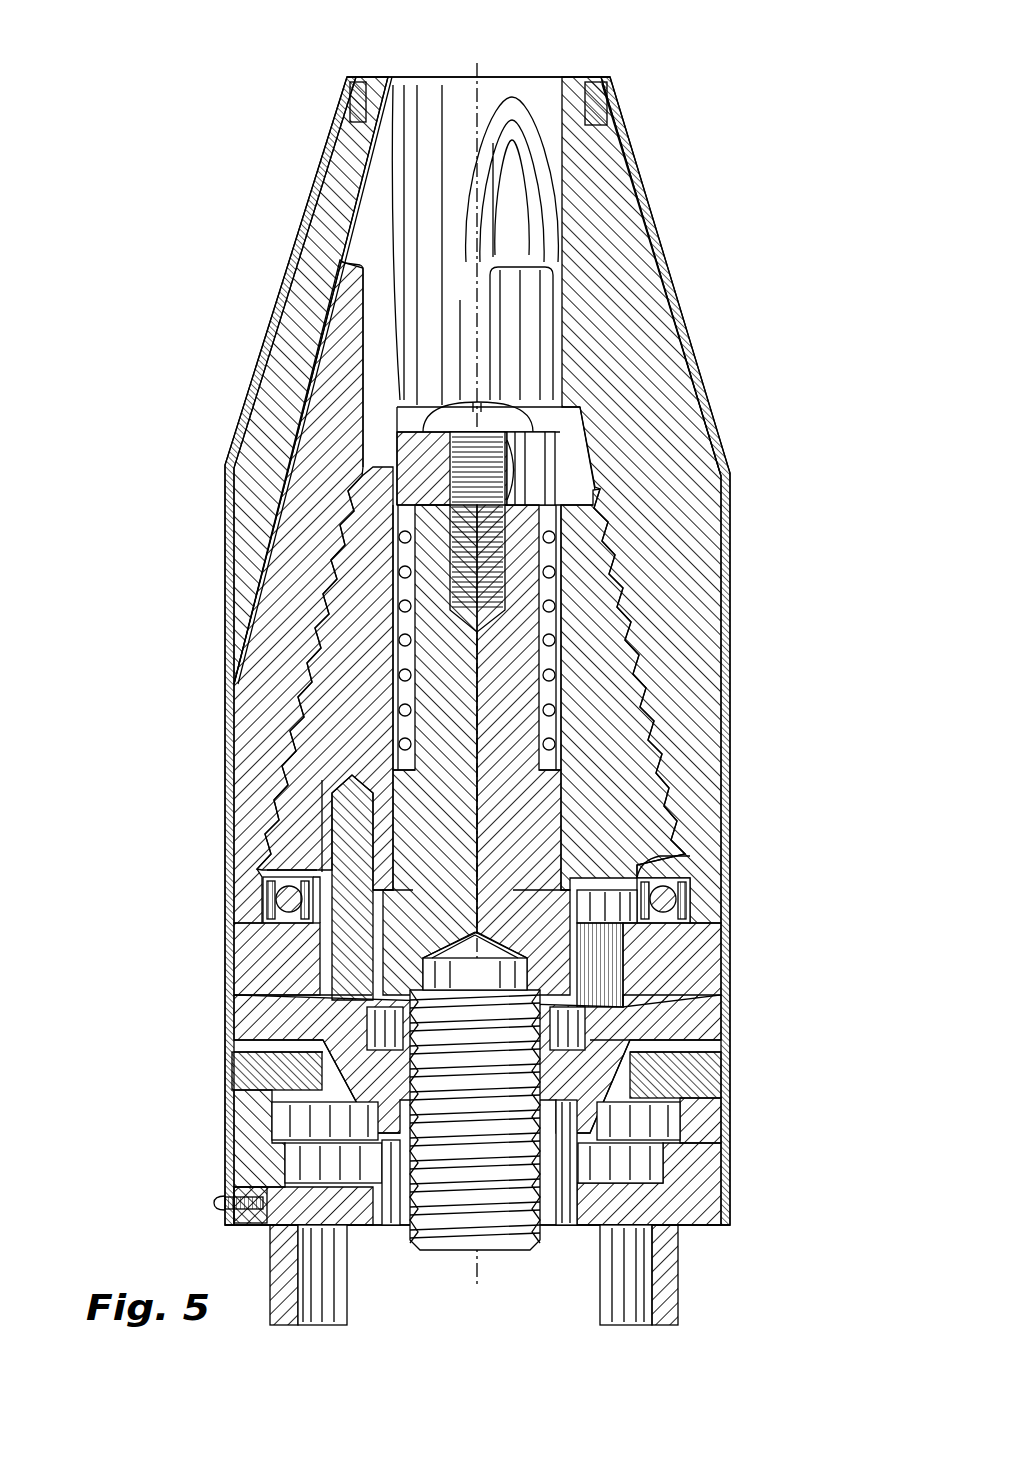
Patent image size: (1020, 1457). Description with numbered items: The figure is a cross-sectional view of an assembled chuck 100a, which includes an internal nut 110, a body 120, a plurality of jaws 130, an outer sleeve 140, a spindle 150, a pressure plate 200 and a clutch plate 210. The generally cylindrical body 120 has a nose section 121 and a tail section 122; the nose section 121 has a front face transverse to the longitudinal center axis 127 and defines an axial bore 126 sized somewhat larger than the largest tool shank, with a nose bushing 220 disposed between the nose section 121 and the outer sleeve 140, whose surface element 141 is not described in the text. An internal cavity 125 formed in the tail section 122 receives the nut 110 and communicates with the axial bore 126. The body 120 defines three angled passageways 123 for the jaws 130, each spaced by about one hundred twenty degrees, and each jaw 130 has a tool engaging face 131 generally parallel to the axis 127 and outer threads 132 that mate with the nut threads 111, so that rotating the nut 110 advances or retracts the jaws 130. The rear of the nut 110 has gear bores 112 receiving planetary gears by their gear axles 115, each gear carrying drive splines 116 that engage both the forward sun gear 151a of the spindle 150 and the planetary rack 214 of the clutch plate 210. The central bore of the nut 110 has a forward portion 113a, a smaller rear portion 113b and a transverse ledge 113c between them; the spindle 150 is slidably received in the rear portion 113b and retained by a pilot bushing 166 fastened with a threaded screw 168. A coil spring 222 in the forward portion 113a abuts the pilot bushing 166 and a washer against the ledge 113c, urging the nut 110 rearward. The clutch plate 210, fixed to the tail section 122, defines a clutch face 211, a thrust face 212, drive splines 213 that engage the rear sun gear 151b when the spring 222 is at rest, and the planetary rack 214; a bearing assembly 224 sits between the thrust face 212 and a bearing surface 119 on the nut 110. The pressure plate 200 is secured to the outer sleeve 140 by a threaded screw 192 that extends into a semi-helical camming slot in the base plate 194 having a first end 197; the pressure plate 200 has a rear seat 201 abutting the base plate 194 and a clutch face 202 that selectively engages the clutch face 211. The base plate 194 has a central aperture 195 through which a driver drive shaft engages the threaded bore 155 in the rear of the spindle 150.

The chuck 100a is at (173, 344).
The internal nut 110 is at (603, 680).
The nut threads 111 is at (270, 693).
The gear bores 112 is at (323, 823).
The forward portion of central bore 113a is at (548, 595).
The rear portion of central bore 113b is at (538, 817).
The ledge 113c is at (317, 795).
The gear axle 115 is at (280, 885).
The drive splines 116 is at (333, 947).
The bearing surface 119 is at (667, 858).
The body 120 is at (690, 458).
The nose section 121 is at (602, 218).
The tail section 122 is at (713, 913).
The passageways 123 is at (383, 222).
The internal cavity 125 is at (570, 435).
The axial bore 126 is at (456, 95).
The longitudinal center axis 127 is at (478, 63).
The jaws 130 is at (290, 565).
The tool engaging face 131 is at (338, 320).
The jaw threads 132 is at (320, 648).
The outer sleeve 140 is at (730, 582).
The shell surface 141 is at (668, 262).
The spindle 150 is at (505, 700).
The forward sun gear 151a is at (325, 998).
The rear sun gear 151b is at (383, 1155).
The threaded bore 155 is at (489, 1237).
The pilot bushing 166 is at (545, 465).
The threaded screw 168 is at (537, 415).
The threaded screw 192 is at (216, 1206).
The base plate 194 is at (685, 1275).
The central aperture 195 is at (385, 1230).
The first end of camming slot 197 is at (247, 1187).
The pressure plate 200 is at (695, 1115).
The rear seat 201 is at (708, 1170).
The clutch face 202 is at (705, 1080).
The clutch plate 210 is at (672, 1005).
The clutch face 211 is at (700, 1033).
The thrust face 212 is at (705, 943).
The drive splines 213 is at (387, 1070).
The planetary rack 214 is at (310, 980).
The nose bushing 220 is at (613, 105).
The coil spring 222 is at (553, 578).
The bearing assembly 224 is at (682, 893).